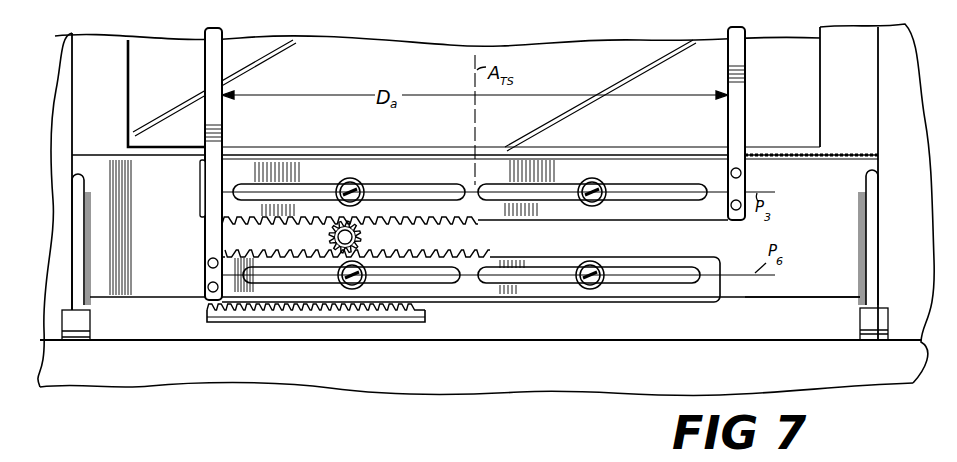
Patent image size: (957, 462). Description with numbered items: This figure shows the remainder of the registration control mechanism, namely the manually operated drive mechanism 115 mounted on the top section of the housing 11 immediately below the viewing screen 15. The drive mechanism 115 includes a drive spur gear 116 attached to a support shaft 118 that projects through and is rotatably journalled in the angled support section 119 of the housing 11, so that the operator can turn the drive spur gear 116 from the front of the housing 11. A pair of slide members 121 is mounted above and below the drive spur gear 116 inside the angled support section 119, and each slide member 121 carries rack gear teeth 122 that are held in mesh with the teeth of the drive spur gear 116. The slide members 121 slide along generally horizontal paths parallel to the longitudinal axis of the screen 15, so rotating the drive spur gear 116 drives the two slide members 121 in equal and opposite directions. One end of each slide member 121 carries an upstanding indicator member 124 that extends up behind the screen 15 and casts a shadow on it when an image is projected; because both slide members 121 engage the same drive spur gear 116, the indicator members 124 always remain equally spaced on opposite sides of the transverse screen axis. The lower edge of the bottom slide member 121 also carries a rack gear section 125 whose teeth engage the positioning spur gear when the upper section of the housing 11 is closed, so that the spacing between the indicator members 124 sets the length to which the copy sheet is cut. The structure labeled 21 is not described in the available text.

The housing 11 is at (120, 392).
The viewing screen 15 is at (672, 42).
The frame bracket 21 is at (125, 43).
The drive mechanism 115 is at (205, 251).
The drive spur gear 116 is at (363, 238).
The support shaft 118 is at (335, 239).
The angled support section 119 is at (836, 244).
The slide members 121 is at (607, 163).
The rack gear teeth 122 is at (491, 255).
The indicator members 124 is at (216, 118).
The rack gear section 125 is at (278, 312).